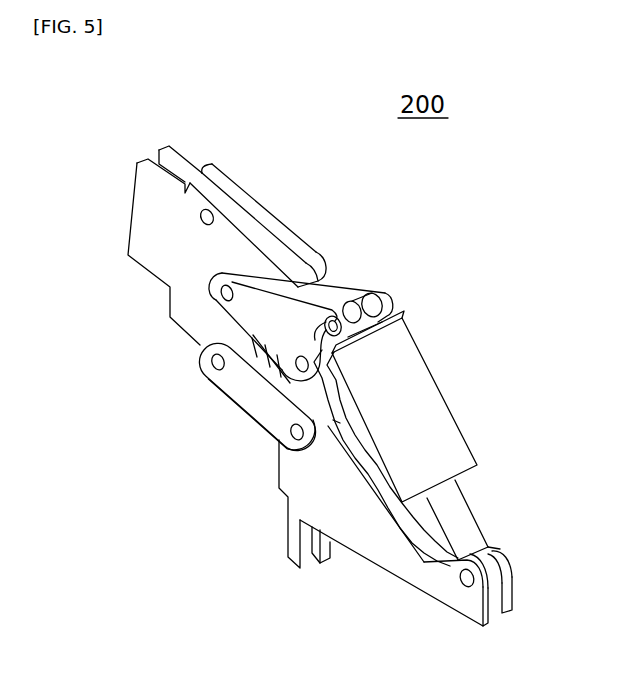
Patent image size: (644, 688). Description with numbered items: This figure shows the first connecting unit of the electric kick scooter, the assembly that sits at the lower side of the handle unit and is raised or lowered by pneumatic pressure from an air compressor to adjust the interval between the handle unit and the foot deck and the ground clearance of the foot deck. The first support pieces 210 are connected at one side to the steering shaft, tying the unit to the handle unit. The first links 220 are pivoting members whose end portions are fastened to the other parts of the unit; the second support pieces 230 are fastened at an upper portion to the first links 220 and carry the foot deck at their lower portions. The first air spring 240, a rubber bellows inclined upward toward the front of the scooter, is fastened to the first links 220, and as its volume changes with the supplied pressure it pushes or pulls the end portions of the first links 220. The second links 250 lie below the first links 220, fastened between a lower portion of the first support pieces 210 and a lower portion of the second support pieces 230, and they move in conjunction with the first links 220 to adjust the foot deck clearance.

The first support pieces 210 is at (133, 205).
The first links 220 is at (313, 312).
The second support pieces 230 is at (404, 576).
The first air spring 240 is at (435, 390).
The second links 250 is at (247, 409).